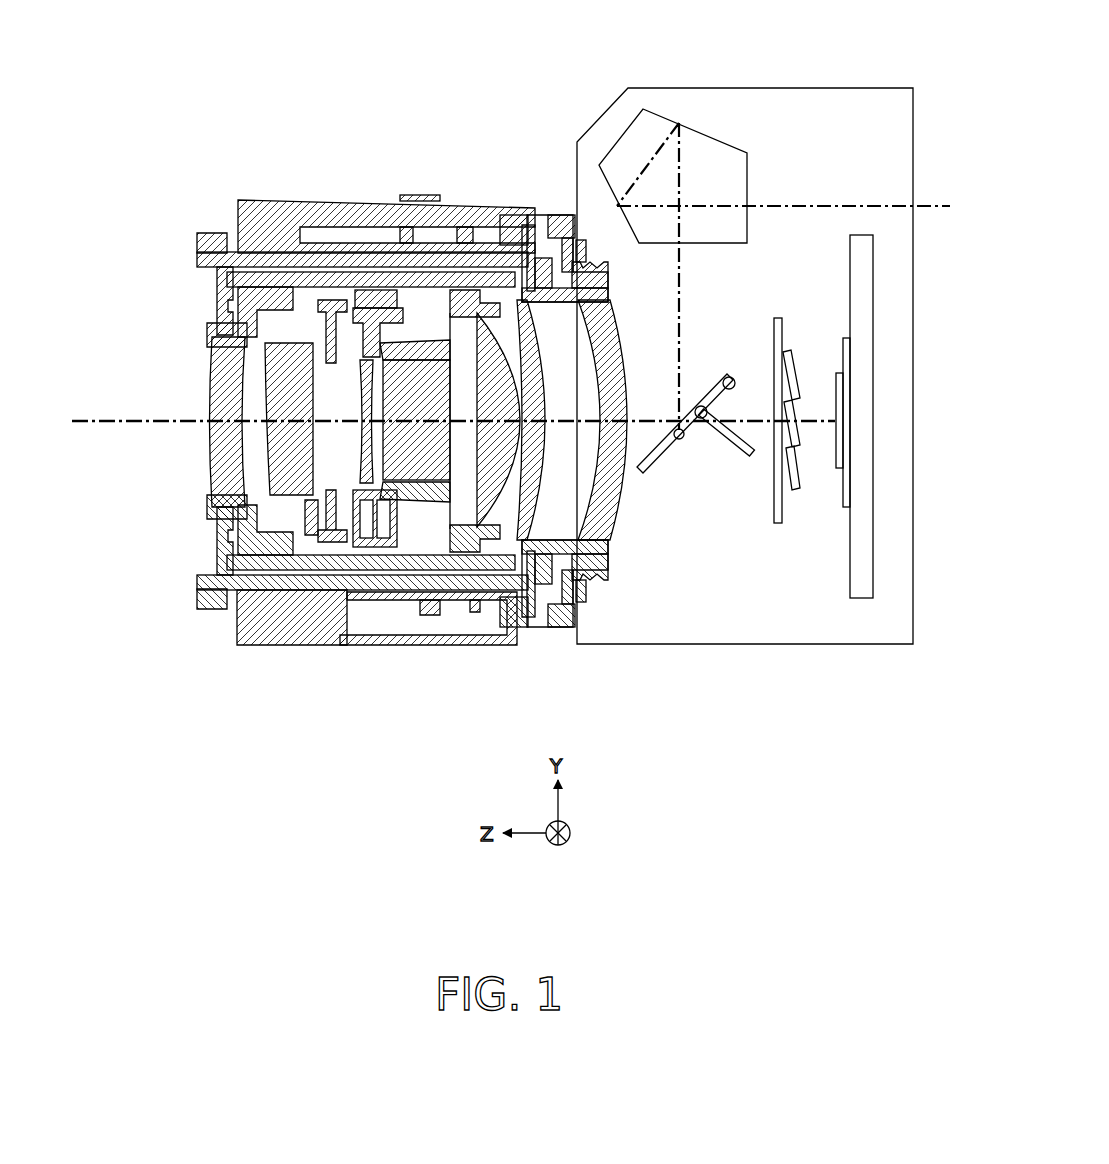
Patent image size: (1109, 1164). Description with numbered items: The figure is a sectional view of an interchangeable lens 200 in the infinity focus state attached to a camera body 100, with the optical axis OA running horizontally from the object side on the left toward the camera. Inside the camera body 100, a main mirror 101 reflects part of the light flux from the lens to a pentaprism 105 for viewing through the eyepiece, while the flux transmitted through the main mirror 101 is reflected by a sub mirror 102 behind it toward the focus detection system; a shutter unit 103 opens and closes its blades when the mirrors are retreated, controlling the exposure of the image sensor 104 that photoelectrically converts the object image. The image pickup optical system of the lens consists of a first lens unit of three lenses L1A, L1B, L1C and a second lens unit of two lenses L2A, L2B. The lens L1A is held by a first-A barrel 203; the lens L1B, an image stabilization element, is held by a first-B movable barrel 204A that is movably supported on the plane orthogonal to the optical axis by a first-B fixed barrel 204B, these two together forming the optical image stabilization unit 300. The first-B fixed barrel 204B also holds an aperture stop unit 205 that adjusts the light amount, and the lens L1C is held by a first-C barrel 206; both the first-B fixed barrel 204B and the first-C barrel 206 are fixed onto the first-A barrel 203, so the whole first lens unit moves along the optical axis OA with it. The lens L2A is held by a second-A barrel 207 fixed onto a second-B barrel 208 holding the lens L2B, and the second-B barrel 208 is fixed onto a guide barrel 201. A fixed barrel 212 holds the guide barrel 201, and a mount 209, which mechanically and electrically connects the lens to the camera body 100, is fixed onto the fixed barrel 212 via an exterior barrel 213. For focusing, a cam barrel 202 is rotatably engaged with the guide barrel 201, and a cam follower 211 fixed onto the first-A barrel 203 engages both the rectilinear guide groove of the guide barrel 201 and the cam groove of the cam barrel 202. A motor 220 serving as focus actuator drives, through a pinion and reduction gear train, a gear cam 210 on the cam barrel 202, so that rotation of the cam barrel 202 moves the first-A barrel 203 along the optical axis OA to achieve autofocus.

The camera body 100 is at (823, 88).
The main mirror 101 is at (679, 440).
The sub mirror 102 is at (728, 447).
The shutter unit 103 is at (783, 495).
The image sensor 104 is at (828, 468).
The pentaprism 105 is at (718, 137).
The interchangeable lens 200 is at (432, 92).
The guide barrel 201 is at (365, 275).
The cam barrel 202 is at (357, 272).
The 1A barrel 203 is at (262, 297).
The 1B movable barrel 204A is at (363, 317).
The 1B fixed barrel 204B is at (395, 490).
The aperture stop unit 205 is at (323, 327).
The 1C barrel 206 is at (462, 320).
The 2A barrel 207 is at (525, 235).
The 2B barrel 208 is at (548, 250).
The mount 209 is at (578, 275).
The gear cam 210 is at (402, 272).
The cam follower 211 is at (380, 260).
The fixed barrel 212 is at (205, 245).
The exterior barrel 213 is at (405, 283).
The motor 220 is at (507, 230).
The optical image stabilization unit 300 is at (365, 548).
The lens L1A is at (212, 490).
The lens L1B is at (345, 455).
The lens L1C is at (420, 480).
The lens L2A is at (525, 520).
The lens L2B is at (605, 520).
The optical axis OA is at (105, 425).